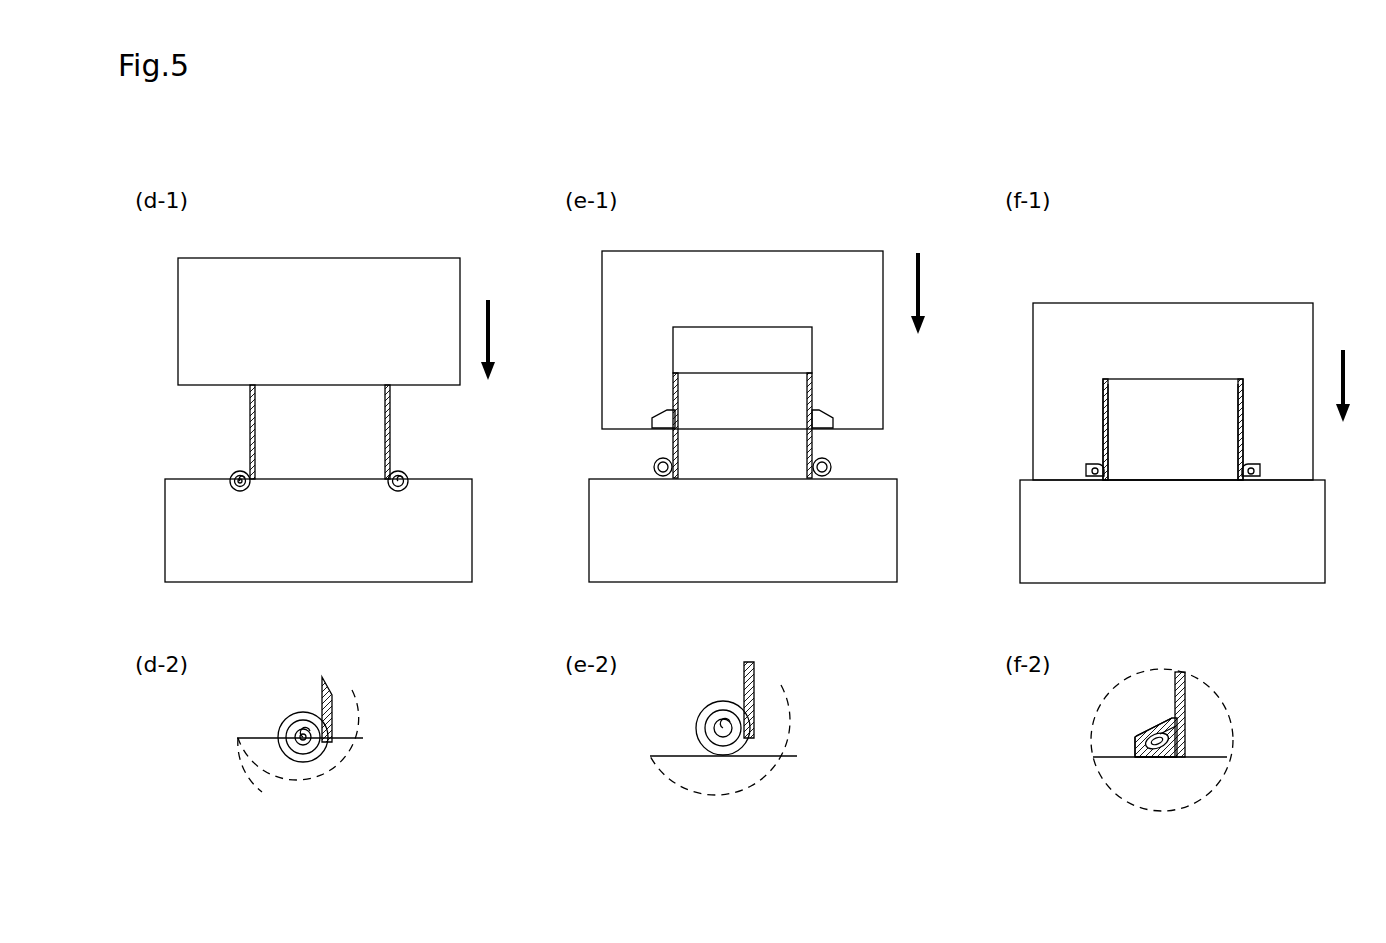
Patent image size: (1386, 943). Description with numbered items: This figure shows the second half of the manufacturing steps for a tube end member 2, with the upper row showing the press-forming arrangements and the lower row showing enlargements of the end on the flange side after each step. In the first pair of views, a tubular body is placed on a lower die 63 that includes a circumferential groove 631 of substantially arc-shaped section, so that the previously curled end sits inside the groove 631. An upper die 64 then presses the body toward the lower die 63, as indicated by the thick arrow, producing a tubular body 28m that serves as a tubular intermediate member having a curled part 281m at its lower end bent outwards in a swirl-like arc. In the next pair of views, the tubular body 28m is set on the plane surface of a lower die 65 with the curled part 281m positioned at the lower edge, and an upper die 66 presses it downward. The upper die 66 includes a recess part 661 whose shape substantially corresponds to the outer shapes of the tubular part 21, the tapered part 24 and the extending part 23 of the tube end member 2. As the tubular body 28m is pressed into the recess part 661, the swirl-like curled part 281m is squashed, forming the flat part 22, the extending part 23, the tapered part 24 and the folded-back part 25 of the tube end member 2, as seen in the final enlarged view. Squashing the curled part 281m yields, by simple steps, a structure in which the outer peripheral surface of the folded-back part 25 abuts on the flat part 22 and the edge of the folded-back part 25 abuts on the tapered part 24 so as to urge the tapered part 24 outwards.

The upper die 64 is at (368, 268).
The lower die 63 is at (302, 568).
The circumferential groove 631 is at (238, 492).
The tubular body 28m is at (250, 416).
The curled part 281m is at (392, 466).
The upper die 66 is at (766, 268).
The recess part 661 is at (697, 327).
The lower die 65 is at (718, 568).
The tube end member 2 is at (1100, 400).
The tubular part 21 is at (1188, 700).
The flat part 22 is at (1160, 758).
The extending part 23 is at (1134, 746).
The tapered part 24 is at (1152, 732).
The folded-back part 25 is at (1174, 738).